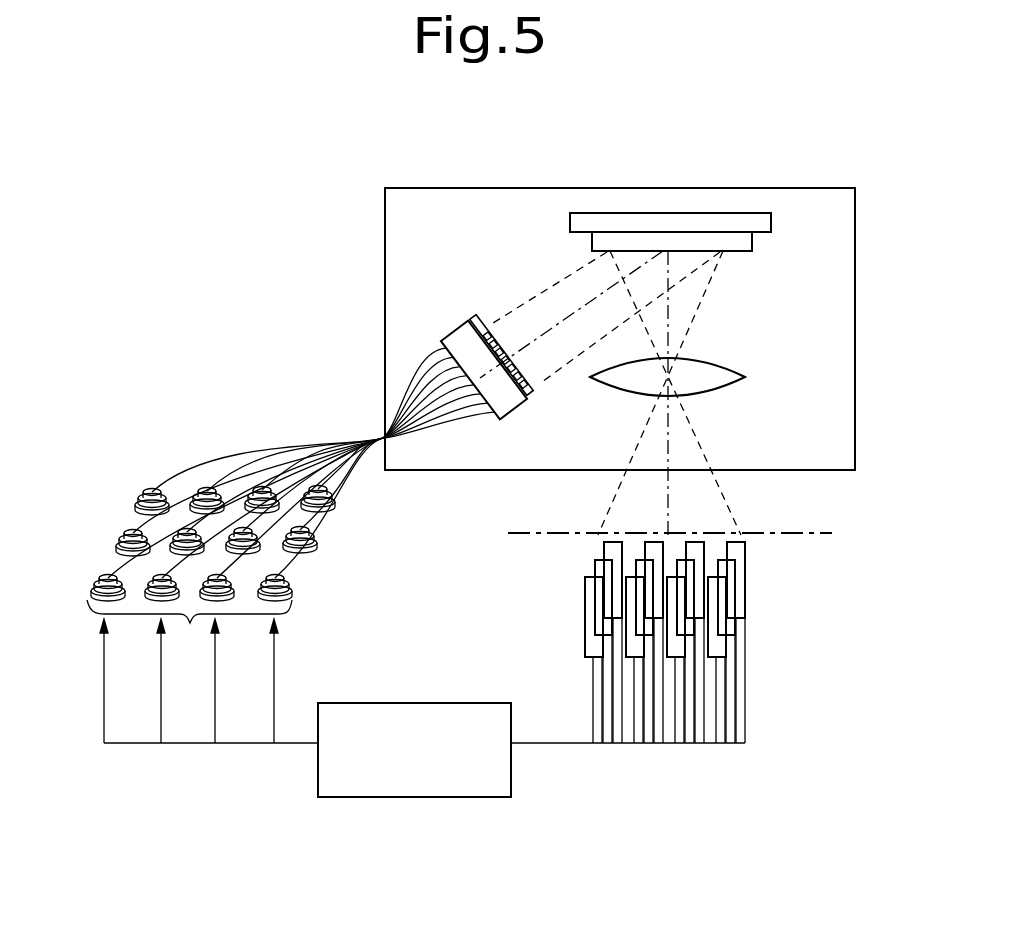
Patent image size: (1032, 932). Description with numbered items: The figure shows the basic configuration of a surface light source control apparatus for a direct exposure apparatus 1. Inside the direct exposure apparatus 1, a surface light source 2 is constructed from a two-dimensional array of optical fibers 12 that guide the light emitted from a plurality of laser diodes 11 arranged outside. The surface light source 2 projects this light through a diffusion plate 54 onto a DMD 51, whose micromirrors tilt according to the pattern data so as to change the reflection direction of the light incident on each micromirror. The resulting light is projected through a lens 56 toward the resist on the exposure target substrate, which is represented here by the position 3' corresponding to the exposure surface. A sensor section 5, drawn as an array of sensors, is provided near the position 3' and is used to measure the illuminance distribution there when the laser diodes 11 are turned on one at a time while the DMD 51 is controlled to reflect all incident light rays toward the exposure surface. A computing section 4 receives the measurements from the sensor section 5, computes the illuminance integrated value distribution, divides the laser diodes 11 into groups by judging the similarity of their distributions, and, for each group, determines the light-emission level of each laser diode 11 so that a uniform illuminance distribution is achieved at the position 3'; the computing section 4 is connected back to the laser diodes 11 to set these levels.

The direct exposure apparatus 1 is at (783, 188).
The DMD 51 is at (752, 238).
The lens 56 is at (743, 370).
The surface light source 2 is at (441, 341).
The diffusion plate 54 is at (473, 318).
The optical fibers 12 is at (208, 452).
The laser diodes 11 is at (124, 529).
The position corresponding to the exposure surface of the exposure target substrate 3' is at (714, 505).
The sensor section 5 is at (757, 637).
The computing section 4 is at (415, 797).